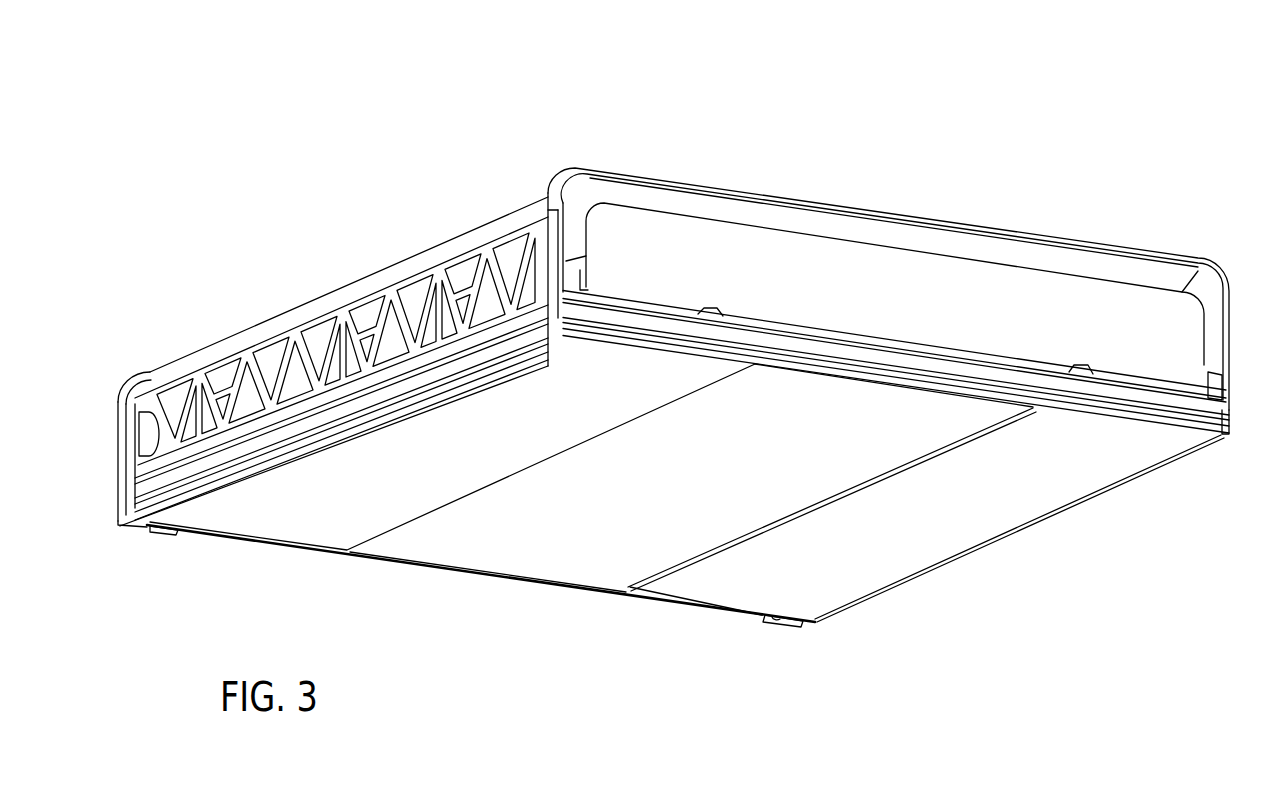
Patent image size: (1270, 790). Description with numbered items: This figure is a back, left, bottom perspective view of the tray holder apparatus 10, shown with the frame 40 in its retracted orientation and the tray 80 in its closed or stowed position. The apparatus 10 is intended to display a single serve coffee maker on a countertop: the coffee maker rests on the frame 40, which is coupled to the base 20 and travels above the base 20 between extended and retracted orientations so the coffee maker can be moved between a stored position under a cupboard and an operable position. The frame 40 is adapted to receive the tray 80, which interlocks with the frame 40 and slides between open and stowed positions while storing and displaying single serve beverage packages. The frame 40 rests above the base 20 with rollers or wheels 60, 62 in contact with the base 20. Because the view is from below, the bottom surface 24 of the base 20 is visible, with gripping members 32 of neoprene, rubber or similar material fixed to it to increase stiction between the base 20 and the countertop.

The tray holder apparatus 10 is at (283, 180).
The base 20 is at (390, 565).
The bottom surface 24 is at (520, 553).
The gripping members 32 is at (267, 510).
The frame 40 is at (412, 262).
The roller or wheel 60 is at (780, 624).
The roller or wheel 62 is at (167, 532).
The tray 80 is at (757, 262).